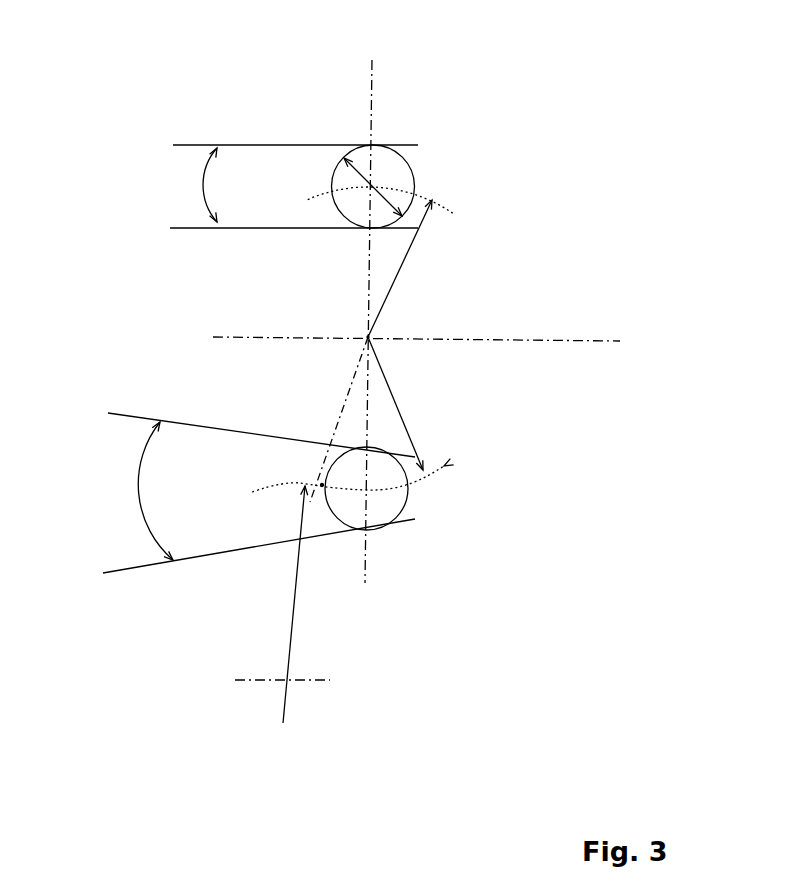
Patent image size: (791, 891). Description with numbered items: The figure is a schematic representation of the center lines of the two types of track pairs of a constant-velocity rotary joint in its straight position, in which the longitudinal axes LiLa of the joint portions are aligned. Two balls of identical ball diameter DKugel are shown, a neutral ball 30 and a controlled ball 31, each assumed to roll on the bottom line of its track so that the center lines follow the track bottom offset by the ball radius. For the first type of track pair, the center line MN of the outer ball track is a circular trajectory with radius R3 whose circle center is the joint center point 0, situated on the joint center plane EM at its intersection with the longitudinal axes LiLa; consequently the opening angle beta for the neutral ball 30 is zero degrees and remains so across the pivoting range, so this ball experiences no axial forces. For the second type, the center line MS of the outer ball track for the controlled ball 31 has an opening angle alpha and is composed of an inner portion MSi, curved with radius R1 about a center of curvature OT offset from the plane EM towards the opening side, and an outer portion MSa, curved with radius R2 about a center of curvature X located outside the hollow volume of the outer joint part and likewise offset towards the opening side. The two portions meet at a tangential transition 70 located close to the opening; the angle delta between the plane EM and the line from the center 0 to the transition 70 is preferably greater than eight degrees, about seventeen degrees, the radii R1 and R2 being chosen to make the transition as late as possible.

The ball 30 is at (398, 167).
The ball 31 is at (400, 500).
The tangential transition 70 is at (322, 485).
The joint center plane EM is at (371, 88).
The longitudinal axes LiLa is at (597, 341).
The ball diameter DKugel is at (333, 172).
The opening angle beta is at (200, 185).
The center line MN is at (427, 202).
The radius R3 is at (400, 268).
The joint center point 0 is at (368, 333).
The center of curvature OT is at (347, 337).
The radius R1 is at (403, 403).
The angle delta is at (339, 419).
The opening angle alpha is at (259, 493).
The center line MS is at (446, 466).
The inner portion MSi is at (440, 468).
The outer portion MSa is at (272, 487).
The radius R2 is at (285, 604).
The center of curvature X is at (283, 680).